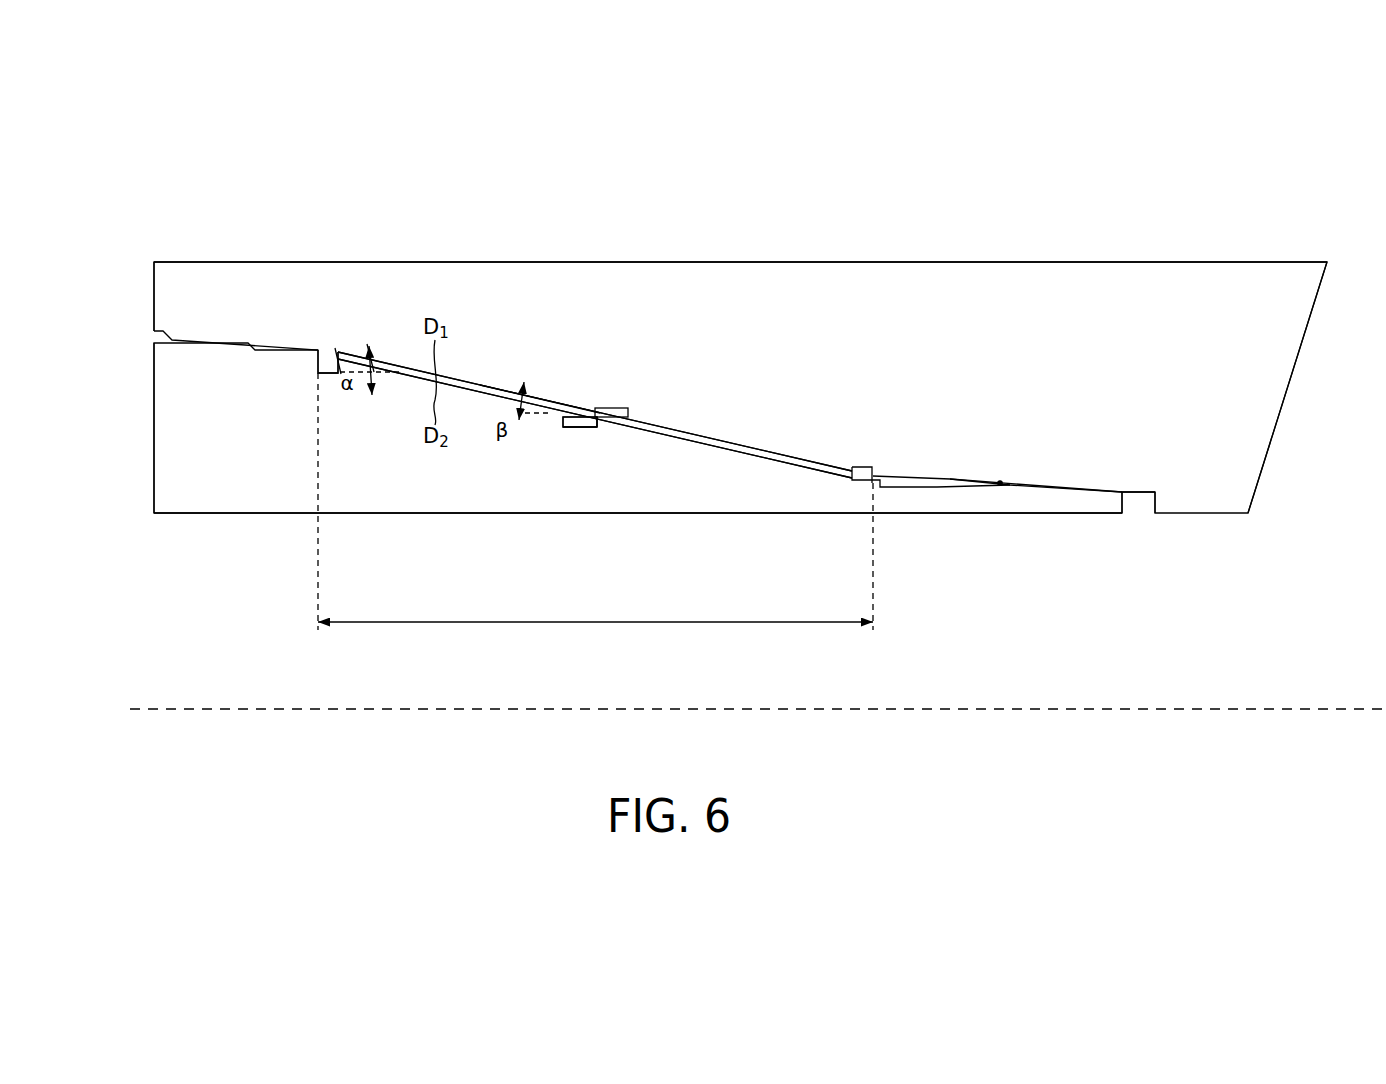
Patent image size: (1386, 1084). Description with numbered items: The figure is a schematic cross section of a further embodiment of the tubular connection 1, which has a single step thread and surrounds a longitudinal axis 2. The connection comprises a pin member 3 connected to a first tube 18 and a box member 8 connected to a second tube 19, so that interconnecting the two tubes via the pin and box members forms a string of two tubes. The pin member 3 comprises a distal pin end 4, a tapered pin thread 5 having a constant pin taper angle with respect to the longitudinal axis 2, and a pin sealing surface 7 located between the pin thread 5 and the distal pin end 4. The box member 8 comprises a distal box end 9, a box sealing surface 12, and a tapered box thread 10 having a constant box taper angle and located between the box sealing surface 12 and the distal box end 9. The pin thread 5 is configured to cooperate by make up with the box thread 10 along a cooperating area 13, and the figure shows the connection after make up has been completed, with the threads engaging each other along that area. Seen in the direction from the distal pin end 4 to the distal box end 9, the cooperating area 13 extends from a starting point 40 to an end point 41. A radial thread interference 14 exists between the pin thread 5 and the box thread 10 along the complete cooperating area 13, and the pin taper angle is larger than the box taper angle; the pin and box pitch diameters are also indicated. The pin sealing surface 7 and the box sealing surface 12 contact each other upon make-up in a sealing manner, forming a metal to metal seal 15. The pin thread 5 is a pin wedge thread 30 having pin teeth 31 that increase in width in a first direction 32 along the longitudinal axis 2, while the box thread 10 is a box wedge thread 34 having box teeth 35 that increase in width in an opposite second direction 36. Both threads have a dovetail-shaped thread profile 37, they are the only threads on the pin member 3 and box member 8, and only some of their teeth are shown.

The tubular connection 1 is at (1293, 218).
The longitudinal axis 2 is at (276, 712).
The pin member 3 is at (186, 517).
The distal pin end 4 is at (1105, 516).
The pin thread 5 is at (632, 403).
The pin sealing surface 7 is at (1015, 484).
The box member 8 is at (996, 258).
The distal box end 9 is at (162, 252).
The box thread 10 is at (565, 432).
The box sealing surface 12 is at (1028, 490).
The cooperating area 13 is at (595, 624).
The radial thread interference 14 is at (540, 392).
The metal to metal seal 15 is at (998, 490).
The first tube 18 is at (148, 481).
The second tube 19 is at (1292, 407).
The pin wedge thread 30 is at (617, 405).
The pin teeth 31 is at (605, 407).
The first direction 32 is at (1138, 227).
The box wedge thread 34 is at (594, 432).
The box teeth 35 is at (580, 432).
The second direction 36 is at (1195, 750).
The dovetail-shaped thread profile 37 is at (629, 417).
The starting point 40 is at (870, 466).
The end point 41 is at (318, 350).